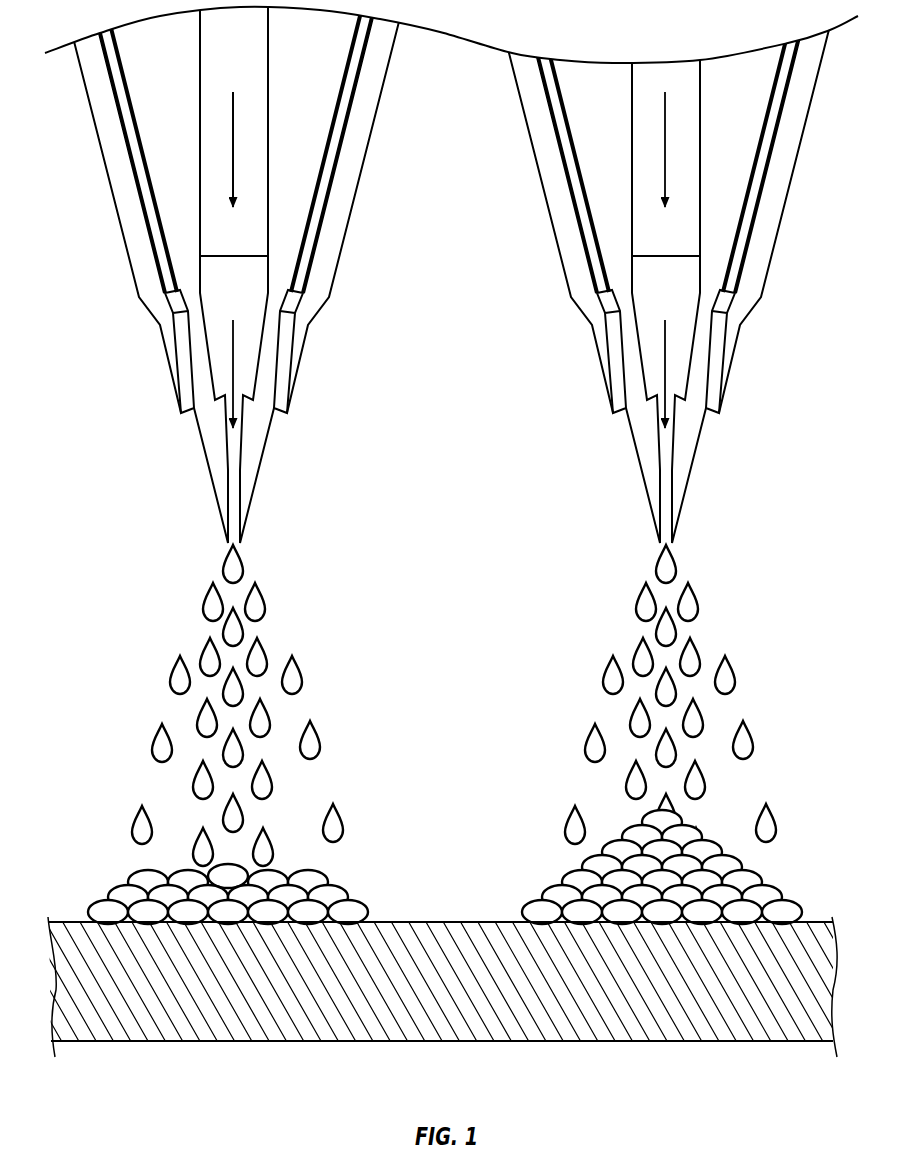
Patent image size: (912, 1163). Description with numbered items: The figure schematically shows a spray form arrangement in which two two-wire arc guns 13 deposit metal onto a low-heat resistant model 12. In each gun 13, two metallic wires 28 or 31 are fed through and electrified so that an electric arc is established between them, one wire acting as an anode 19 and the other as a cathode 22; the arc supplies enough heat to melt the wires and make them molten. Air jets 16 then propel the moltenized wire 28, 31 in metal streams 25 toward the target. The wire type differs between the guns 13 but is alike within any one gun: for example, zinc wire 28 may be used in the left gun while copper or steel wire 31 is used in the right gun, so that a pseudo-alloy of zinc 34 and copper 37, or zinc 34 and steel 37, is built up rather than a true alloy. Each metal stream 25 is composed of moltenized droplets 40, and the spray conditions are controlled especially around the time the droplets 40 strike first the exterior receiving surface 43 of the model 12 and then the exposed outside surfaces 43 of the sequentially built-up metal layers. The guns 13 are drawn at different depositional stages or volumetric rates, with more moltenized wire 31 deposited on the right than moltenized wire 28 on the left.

The low-heat resistant model 12 is at (445, 1041).
The gun 13 is at (62, 210).
The air jets 16 is at (232, 338).
The anode 19 is at (160, 374).
The cathode 22 is at (309, 375).
The metal streams 25 is at (98, 668).
The wire 28 is at (263, 508).
The wire 31 is at (645, 508).
The zinc 34 is at (342, 727).
The copper or steel 37 is at (765, 727).
The droplet 40 is at (180, 627).
The exterior receiving surface 43 is at (72, 920).